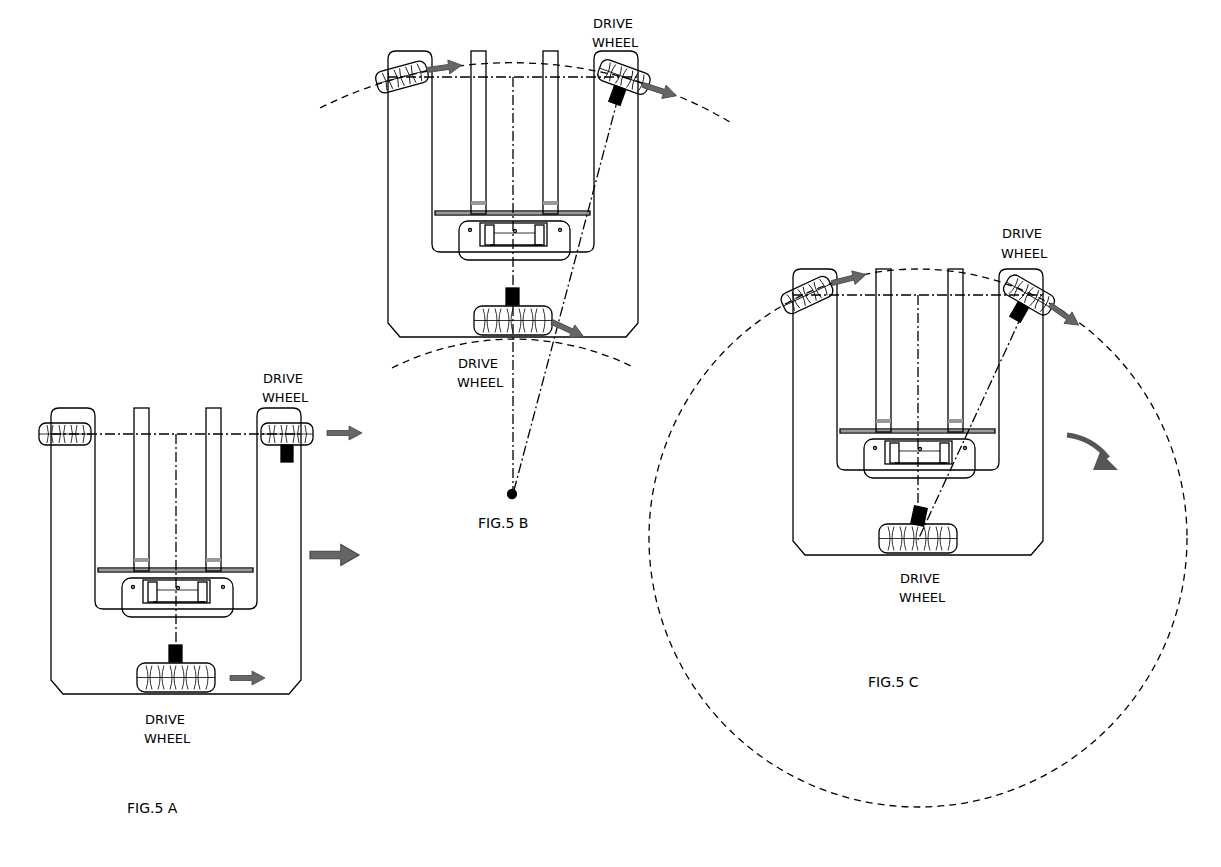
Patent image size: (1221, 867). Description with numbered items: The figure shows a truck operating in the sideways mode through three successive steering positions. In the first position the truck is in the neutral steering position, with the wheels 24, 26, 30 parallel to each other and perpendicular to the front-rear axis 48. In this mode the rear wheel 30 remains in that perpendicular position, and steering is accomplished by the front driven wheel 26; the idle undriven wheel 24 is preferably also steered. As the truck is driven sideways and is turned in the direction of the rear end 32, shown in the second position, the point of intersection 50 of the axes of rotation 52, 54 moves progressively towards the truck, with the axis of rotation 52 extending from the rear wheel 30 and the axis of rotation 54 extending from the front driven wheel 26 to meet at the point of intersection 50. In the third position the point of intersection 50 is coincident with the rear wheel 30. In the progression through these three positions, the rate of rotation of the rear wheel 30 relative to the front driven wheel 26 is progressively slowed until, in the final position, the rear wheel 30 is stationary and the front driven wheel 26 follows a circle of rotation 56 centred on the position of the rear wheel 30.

In FIG. 5A, the idle undriven wheel 24 is at (67, 425).
In FIG. 5A, the front driven wheel 26 is at (302, 424).
In FIG. 5B, the front driven wheel 26 is at (641, 72).
In FIG. 5A, the rear wheel 30 is at (205, 690).
In FIG. 5B, the rear wheel 30 is at (490, 306).
In FIG. 5C, the rear wheel 30 is at (888, 547).
In FIG. 5A, the rear end 32 is at (87, 692).
In FIG. 5A, the front-rear axis 48 is at (176, 490).
In FIG. 5B, the front-rear axis 48 is at (513, 127).
In FIG. 5B, the point of intersection 50 is at (518, 495).
In FIG. 5C, the point of intersection 50 is at (913, 524).
In FIG. 5B, the axis of rotation 52 is at (512, 440).
In FIG. 5B, the axis of rotation 54 is at (543, 383).
In FIG. 5C, the axis of rotation 54 is at (1005, 342).
In FIG. 5C, the circle of rotation 56 is at (1157, 665).